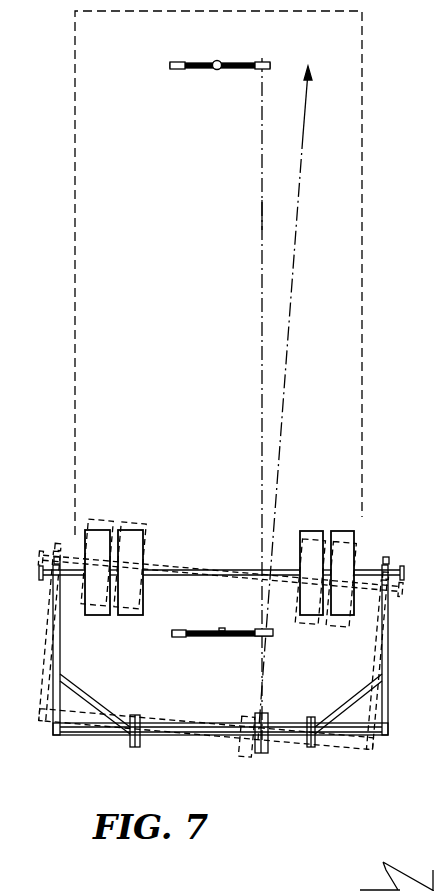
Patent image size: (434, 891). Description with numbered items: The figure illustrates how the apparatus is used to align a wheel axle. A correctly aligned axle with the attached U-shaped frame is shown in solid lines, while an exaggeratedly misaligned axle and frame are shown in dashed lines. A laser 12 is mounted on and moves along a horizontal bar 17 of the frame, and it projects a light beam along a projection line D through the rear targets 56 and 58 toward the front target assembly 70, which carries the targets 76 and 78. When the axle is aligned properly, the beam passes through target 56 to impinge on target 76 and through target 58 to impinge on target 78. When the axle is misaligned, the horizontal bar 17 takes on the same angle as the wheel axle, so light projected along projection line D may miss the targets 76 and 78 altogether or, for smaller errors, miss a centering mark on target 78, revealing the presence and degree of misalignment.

The front target assembly 70 is at (172, 50).
The target 76 is at (169, 70).
The target 78 is at (268, 70).
The projection line D is at (262, 222).
The target 56 is at (182, 630).
The target 58 is at (270, 631).
The horizontal bar 17 is at (99, 741).
The laser 12 is at (268, 745).